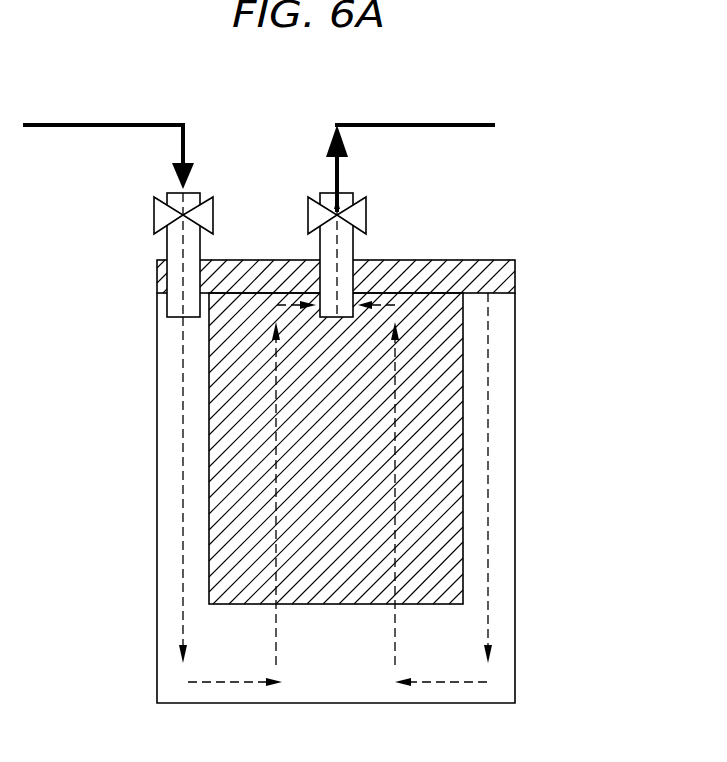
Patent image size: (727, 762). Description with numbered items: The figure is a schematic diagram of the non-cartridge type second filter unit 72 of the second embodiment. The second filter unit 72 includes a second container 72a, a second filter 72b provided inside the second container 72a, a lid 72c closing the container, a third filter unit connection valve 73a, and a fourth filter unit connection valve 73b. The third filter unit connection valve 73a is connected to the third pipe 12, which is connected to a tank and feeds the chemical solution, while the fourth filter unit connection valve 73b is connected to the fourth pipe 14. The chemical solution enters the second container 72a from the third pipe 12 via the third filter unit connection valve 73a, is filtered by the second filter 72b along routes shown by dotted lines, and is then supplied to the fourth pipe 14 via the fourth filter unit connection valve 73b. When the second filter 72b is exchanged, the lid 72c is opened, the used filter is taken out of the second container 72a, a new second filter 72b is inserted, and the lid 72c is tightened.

The third pipe 12 is at (67, 125).
The fourth pipe 14 is at (376, 125).
The second filter unit 72 is at (375, 411).
The second container 72a is at (515, 598).
The second filter 72b is at (250, 605).
The lid 72c is at (450, 260).
The third filter unit connection valve 73a is at (214, 211).
The fourth filter unit connection valve 73b is at (367, 212).